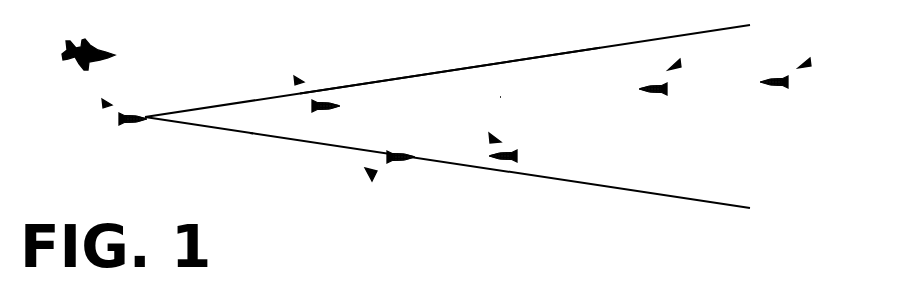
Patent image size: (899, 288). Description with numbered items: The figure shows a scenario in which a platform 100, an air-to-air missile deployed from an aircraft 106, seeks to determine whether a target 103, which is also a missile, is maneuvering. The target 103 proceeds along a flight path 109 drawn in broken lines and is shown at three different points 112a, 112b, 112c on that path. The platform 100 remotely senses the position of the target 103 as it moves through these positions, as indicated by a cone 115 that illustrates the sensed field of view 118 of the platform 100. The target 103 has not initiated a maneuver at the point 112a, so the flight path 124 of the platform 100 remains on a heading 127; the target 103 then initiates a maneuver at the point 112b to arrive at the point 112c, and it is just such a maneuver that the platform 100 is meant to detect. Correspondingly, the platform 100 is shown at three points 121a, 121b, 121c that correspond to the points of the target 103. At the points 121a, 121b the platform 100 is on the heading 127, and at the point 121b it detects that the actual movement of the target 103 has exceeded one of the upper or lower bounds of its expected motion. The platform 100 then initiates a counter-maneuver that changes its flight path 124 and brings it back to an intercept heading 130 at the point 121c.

The platform 100 is at (143, 115).
The target 103 is at (502, 159).
The aircraft 106 is at (100, 50).
The flight path 109 is at (715, 83).
The point 112a is at (813, 62).
The point 112b is at (683, 63).
The point 112c is at (487, 137).
The cone 115 is at (450, 70).
The sensed field of view 118 is at (565, 125).
The point 121a is at (100, 103).
The point 121b is at (294, 79).
The point 121c is at (364, 173).
The flight path 124 is at (328, 130).
The heading 127 is at (500, 97).
The heading 130 is at (442, 157).